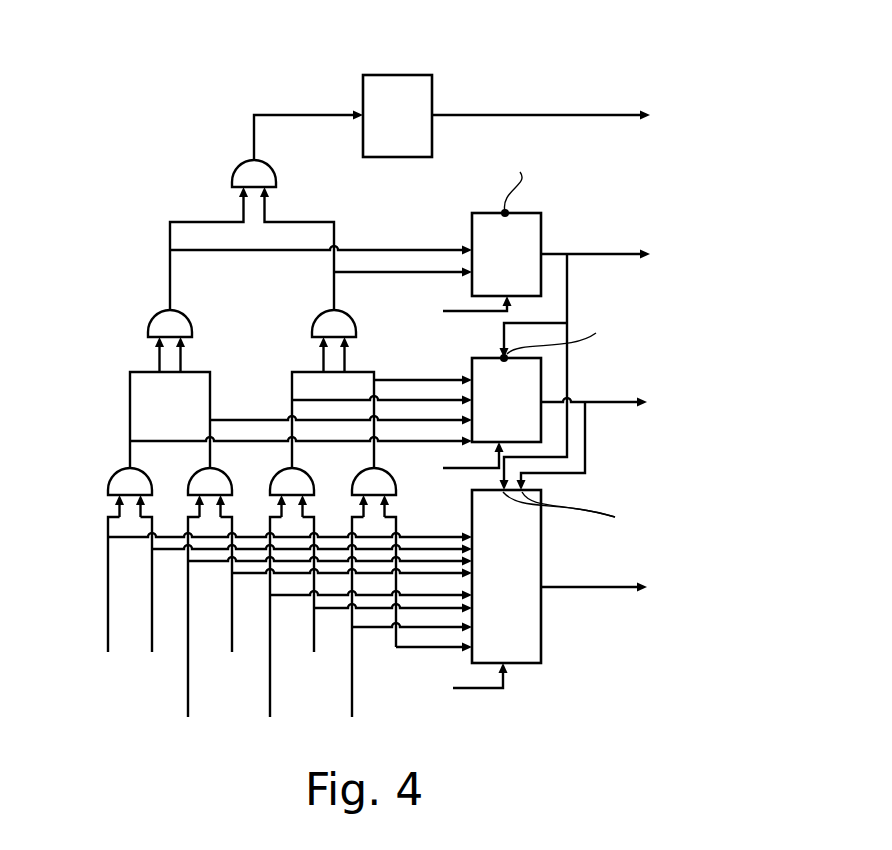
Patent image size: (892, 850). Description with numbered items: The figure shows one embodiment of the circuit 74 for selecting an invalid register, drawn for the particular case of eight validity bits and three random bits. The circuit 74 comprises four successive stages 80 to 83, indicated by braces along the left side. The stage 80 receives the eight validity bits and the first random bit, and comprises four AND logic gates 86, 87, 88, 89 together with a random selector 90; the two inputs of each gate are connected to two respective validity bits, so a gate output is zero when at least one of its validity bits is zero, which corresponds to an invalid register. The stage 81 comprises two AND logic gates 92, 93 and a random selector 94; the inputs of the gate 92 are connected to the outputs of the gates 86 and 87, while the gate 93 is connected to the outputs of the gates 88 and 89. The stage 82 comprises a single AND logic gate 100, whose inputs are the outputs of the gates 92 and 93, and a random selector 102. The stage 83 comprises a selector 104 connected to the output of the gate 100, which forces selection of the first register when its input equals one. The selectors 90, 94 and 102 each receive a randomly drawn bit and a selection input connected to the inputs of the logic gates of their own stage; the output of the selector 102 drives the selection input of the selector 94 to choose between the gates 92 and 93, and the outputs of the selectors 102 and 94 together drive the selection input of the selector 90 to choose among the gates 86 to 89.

The circuit for selecting an invalid register 74 is at (672, 125).
The first stage 80 is at (76, 470).
The second stage 81 is at (76, 310).
The third stage 82 is at (76, 160).
The fourth stage 83 is at (76, 74).
The logic gate 86 is at (133, 483).
The logic gate 87 is at (215, 483).
The logic gate 88 is at (297, 483).
The logic gate 89 is at (380, 483).
The random selector 90 is at (520, 538).
The logic gate 92 is at (160, 322).
The logic gate 93 is at (318, 315).
The random selector 94 is at (490, 378).
The logic gate 100 is at (238, 175).
The random selector 102 is at (533, 230).
The selector 104 is at (415, 87).